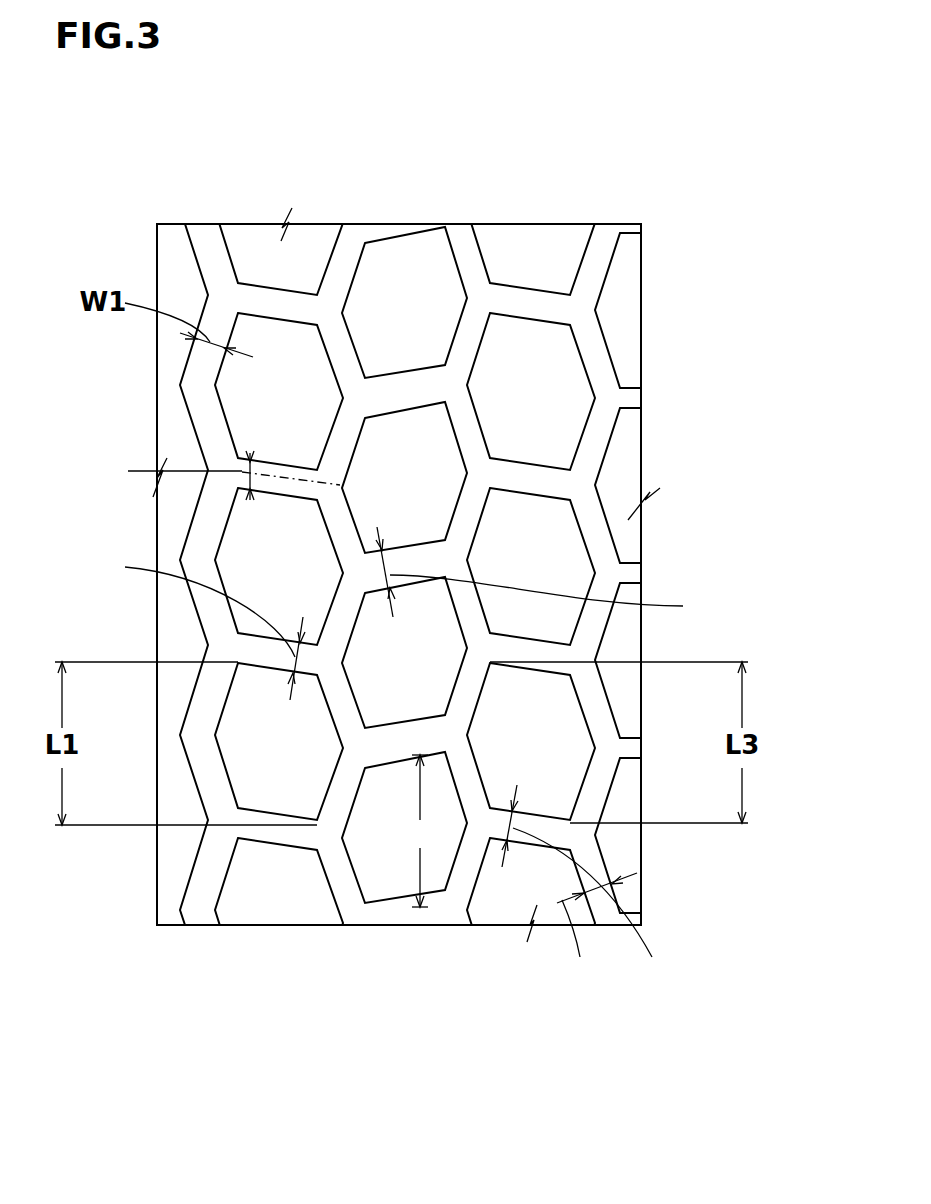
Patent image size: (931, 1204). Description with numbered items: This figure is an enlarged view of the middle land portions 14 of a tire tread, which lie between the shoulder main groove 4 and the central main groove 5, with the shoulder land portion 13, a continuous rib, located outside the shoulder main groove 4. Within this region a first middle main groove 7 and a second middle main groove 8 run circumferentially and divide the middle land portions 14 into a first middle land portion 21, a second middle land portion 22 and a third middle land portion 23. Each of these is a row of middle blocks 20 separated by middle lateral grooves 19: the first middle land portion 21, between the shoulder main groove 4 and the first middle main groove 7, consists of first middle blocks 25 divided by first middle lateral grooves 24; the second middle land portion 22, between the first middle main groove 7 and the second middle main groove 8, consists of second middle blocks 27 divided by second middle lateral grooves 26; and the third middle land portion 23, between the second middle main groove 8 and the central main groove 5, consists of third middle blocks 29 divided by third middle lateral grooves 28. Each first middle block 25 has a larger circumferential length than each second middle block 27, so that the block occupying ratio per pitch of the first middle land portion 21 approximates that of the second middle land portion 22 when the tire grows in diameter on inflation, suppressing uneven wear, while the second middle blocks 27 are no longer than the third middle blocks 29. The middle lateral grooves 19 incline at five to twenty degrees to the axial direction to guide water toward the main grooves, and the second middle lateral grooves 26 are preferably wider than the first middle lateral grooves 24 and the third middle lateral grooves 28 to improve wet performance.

The shoulder main groove 4 is at (206, 246).
The central main groove 5 is at (599, 255).
The first middle main groove 7 is at (347, 257).
The second middle main groove 8 is at (465, 257).
The shoulder land portion 13 is at (175, 246).
The middle land portion 14 is at (480, 124).
The middle lateral groove 19 is at (283, 472).
The middle block 20 is at (305, 1003).
The first middle land portion 21 is at (302, 255).
The second middle land portion 22 is at (408, 260).
The third middle land portion 23 is at (508, 255).
The first middle lateral groove 24 is at (275, 303).
The first middle block 25 is at (275, 390).
The second middle lateral groove 26 is at (392, 734).
The second middle block 27 is at (407, 318).
The third middle lateral groove 28 is at (533, 306).
The third middle block 29 is at (537, 403).